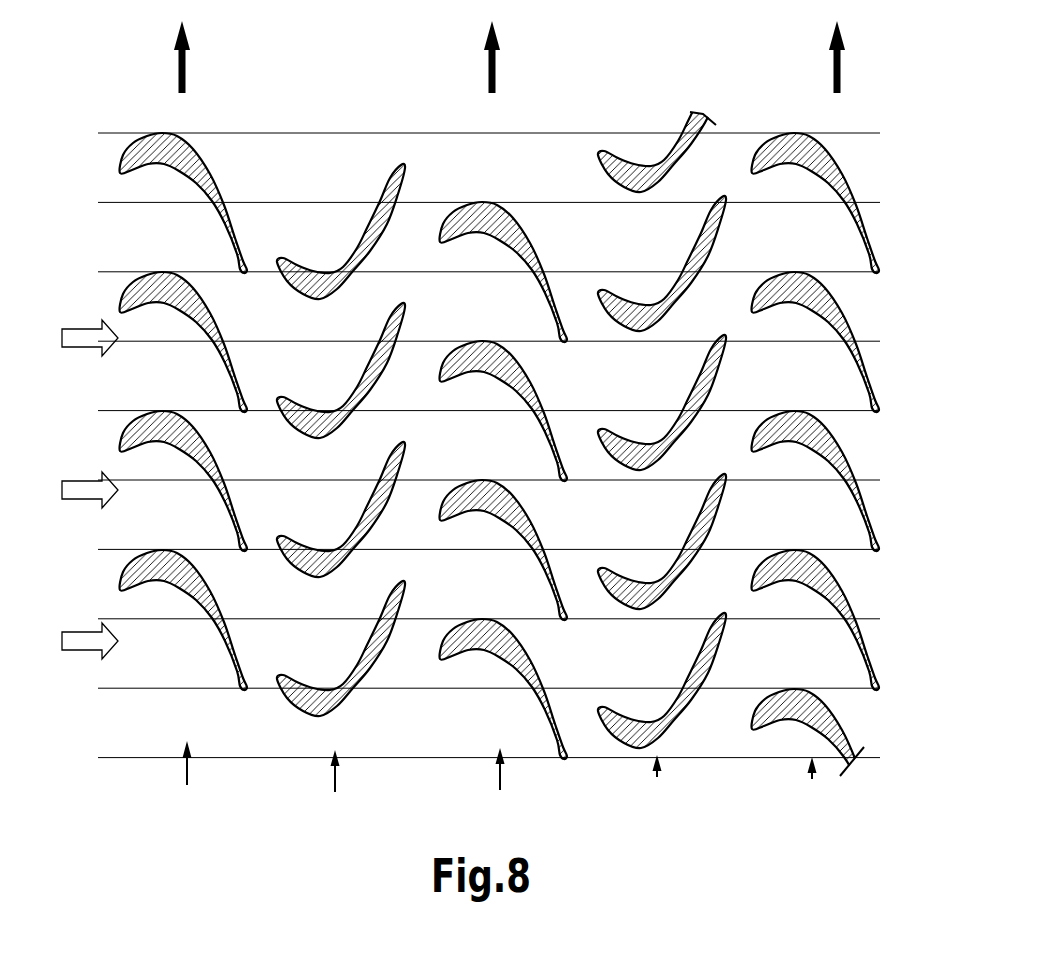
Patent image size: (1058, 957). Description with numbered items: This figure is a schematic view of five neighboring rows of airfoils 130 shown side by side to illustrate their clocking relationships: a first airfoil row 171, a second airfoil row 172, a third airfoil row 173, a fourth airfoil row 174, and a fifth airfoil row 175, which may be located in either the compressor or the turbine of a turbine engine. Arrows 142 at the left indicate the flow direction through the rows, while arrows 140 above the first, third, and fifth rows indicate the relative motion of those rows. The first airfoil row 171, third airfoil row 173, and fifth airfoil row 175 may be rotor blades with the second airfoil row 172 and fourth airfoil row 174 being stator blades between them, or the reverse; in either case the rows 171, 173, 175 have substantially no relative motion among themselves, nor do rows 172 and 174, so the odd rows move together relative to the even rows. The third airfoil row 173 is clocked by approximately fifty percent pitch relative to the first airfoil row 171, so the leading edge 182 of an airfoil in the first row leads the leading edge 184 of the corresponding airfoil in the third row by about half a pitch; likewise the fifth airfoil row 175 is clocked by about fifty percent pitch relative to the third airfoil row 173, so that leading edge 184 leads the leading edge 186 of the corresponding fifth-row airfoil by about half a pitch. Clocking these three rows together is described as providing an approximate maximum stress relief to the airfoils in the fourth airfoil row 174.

The airfoil 130 is at (350, 296).
The arrows 140 is at (185, 71).
The arrows 142 is at (84, 328).
The first airfoil row 171 is at (188, 784).
The second airfoil row 172 is at (336, 791).
The third airfoil row 173 is at (501, 789).
The fourth airfoil row 174 is at (658, 778).
The fifth airfoil row 175 is at (813, 780).
The leading edge of an airfoil in the first airfoil row 182 is at (123, 172).
The leading edge of an airfoil in the third airfoil row 184 is at (440, 239).
The third airfoil 186 is at (753, 310).